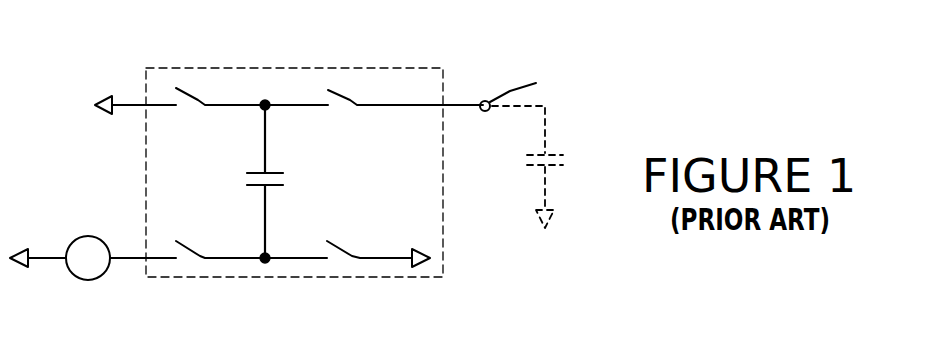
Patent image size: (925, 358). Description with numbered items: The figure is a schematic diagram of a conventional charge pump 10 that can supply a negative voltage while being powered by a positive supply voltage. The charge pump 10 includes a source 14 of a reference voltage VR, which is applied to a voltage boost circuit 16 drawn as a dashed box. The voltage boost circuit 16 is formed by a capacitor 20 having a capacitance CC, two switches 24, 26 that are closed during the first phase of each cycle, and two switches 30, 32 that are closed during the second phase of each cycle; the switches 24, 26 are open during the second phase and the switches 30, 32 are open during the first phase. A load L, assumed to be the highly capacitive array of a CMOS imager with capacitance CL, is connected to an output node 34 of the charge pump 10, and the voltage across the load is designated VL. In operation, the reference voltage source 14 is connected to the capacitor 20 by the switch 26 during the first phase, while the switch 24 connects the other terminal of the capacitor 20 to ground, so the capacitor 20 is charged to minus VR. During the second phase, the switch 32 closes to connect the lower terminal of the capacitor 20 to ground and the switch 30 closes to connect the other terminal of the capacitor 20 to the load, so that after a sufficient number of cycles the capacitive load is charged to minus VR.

The charge pump 10 is at (500, 60).
The reference voltage source 14 is at (92, 280).
The voltage boost circuit 16 is at (308, 172).
The capacitor 20 is at (278, 189).
The switch 24 is at (197, 104).
The switch 26 is at (178, 241).
The switch 30 is at (349, 104).
The switch 32 is at (378, 239).
The output node 34 is at (522, 88).